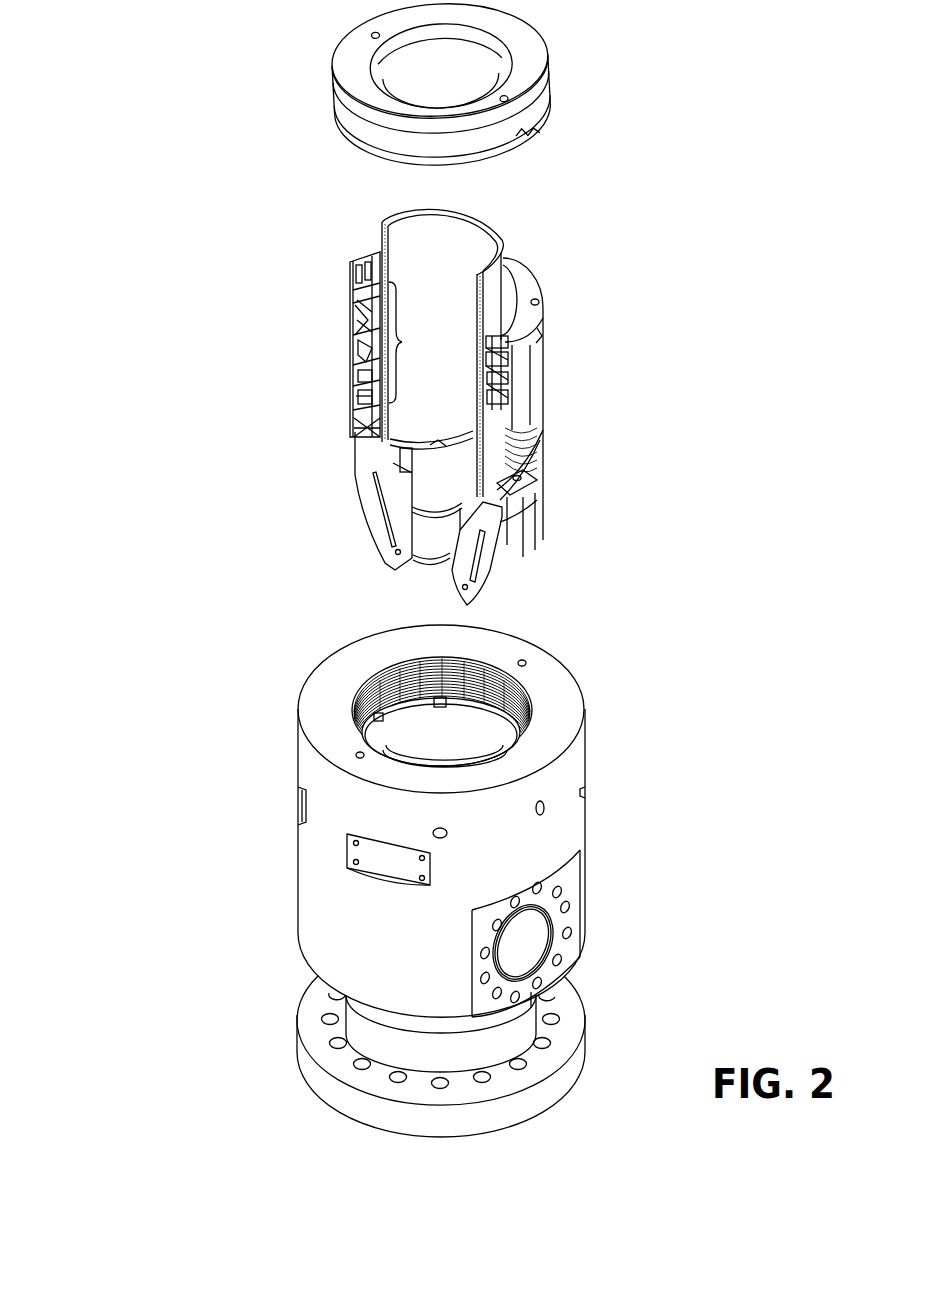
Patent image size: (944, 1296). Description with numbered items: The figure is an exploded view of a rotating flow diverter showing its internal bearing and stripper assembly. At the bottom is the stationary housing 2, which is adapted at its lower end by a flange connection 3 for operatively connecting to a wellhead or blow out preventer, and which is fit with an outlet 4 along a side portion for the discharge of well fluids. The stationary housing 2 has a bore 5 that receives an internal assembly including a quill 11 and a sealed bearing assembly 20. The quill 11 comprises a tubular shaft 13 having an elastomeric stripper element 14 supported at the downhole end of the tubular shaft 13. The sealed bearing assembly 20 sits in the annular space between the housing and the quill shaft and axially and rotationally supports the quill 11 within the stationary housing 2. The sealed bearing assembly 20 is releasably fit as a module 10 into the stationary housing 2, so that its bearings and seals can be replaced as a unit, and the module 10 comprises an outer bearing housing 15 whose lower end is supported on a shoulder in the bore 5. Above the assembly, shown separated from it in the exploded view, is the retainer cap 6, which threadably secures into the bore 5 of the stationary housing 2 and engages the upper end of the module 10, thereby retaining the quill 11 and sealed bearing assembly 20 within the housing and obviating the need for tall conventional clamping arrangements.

The stationary housing 2 is at (320, 932).
The flange connection 3 is at (320, 1080).
The outlet 4 is at (523, 945).
The bore 5 is at (467, 725).
The retainer cap 6 is at (513, 45).
The module 10 is at (585, 317).
The quill 11 is at (442, 353).
The tubular shaft 13 is at (382, 233).
The elastomeric stripper element 14 is at (402, 520).
The outer bearing housing 15 is at (525, 402).
The sealed bearing assembly 20 is at (414, 342).